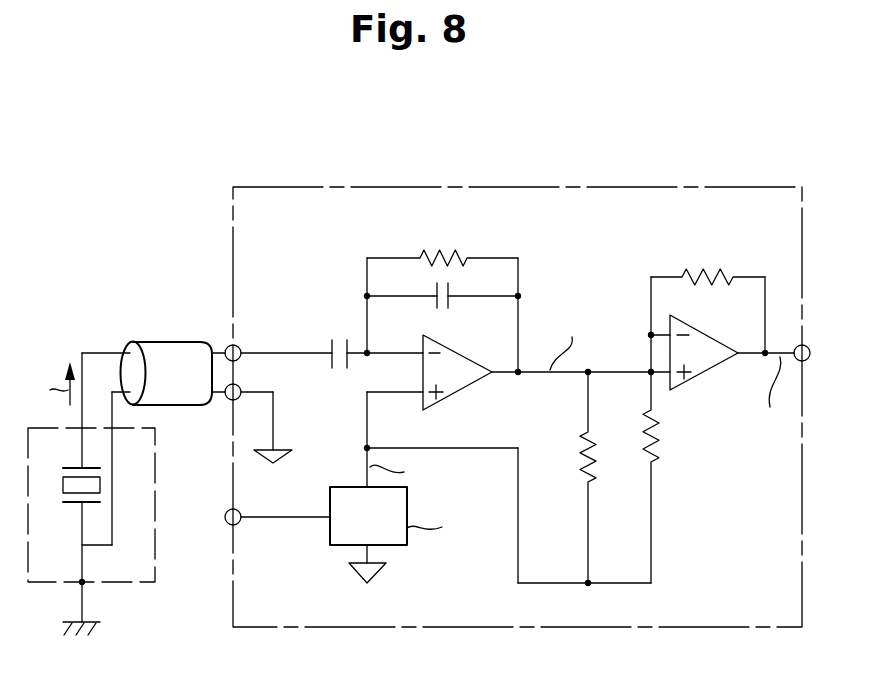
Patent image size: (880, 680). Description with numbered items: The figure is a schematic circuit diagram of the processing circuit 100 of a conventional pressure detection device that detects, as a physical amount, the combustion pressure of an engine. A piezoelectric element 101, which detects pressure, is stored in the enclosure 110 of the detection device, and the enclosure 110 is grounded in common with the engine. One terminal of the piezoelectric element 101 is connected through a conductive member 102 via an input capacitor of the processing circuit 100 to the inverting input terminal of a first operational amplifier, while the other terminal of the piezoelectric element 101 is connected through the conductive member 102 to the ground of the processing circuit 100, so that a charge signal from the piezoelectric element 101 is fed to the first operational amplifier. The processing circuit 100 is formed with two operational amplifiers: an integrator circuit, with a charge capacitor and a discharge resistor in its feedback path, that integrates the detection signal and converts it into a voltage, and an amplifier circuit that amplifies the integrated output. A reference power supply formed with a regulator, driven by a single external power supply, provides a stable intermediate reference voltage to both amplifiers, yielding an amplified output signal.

The processing circuit 100 is at (532, 185).
The piezoelectric element 101 is at (72, 505).
The conductive member 102 is at (172, 340).
The enclosure 110 is at (128, 583).